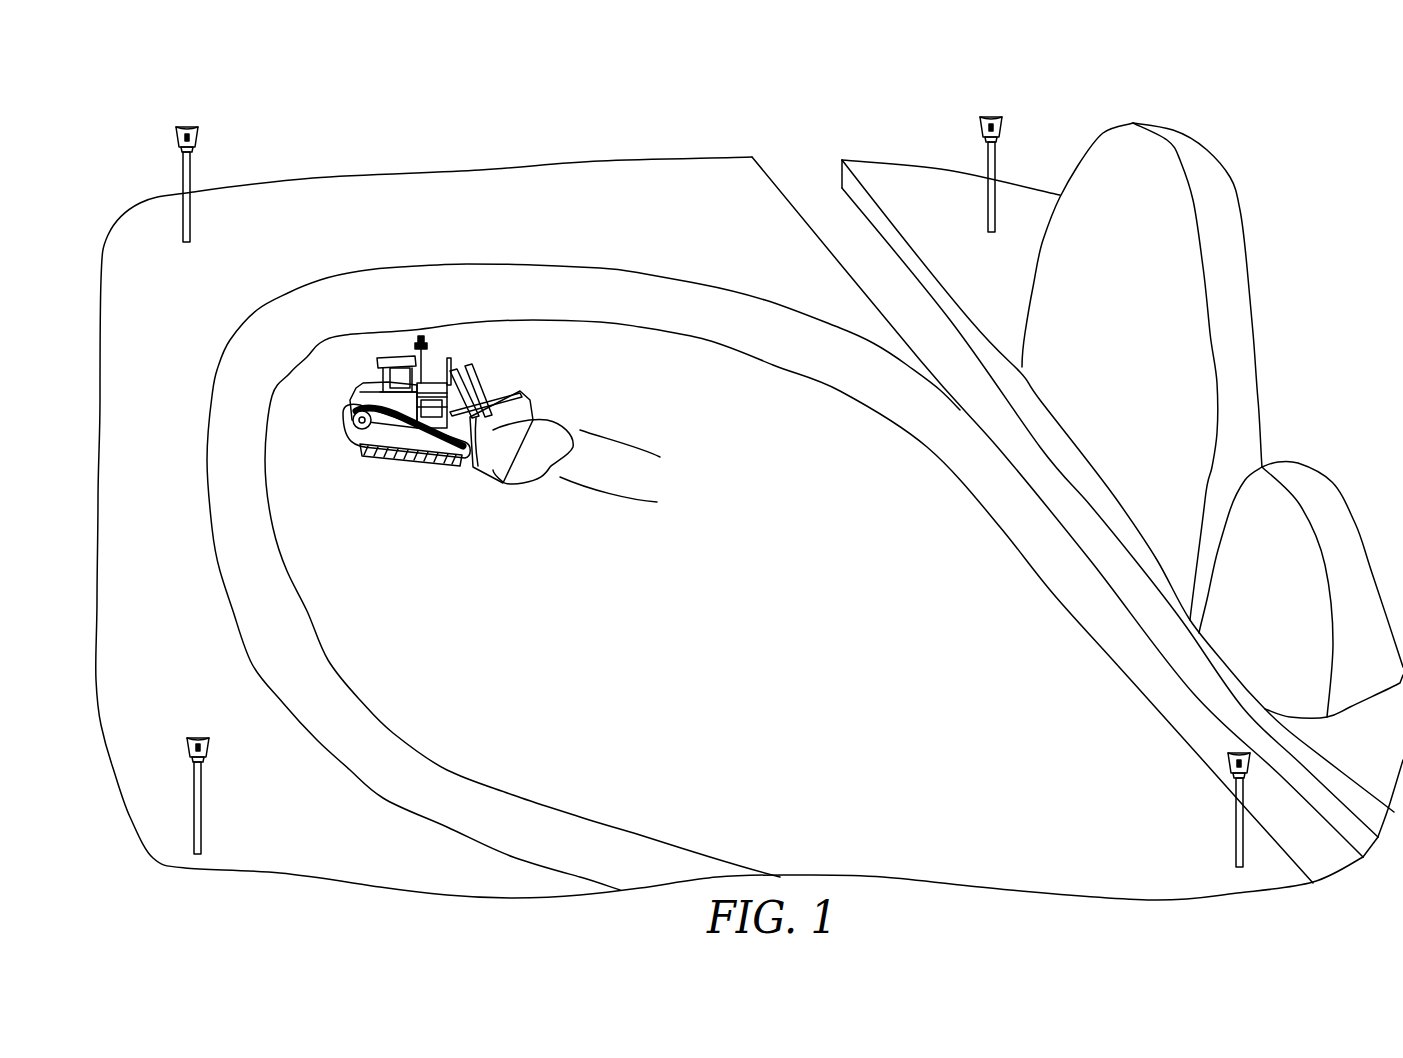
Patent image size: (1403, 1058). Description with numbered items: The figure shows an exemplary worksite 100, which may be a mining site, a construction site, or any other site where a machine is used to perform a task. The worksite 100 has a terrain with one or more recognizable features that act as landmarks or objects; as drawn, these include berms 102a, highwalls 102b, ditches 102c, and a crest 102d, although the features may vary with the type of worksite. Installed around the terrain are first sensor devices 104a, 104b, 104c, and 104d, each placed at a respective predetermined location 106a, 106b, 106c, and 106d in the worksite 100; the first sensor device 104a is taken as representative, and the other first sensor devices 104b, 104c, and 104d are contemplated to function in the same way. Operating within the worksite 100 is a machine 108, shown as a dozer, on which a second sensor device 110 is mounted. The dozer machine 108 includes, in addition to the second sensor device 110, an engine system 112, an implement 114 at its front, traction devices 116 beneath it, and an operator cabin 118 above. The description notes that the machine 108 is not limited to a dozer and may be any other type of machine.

The worksite 100 is at (1291, 120).
The berms 102a is at (417, 292).
The highwalls 102b is at (1145, 346).
The ditches 102c is at (823, 192).
The crest 102d is at (1272, 452).
The first sensor device 104a is at (198, 738).
The first sensor device 104b is at (190, 130).
The first sensor device 104c is at (990, 119).
The first sensor device 104d is at (1230, 753).
The predetermined location 106a is at (203, 805).
The predetermined location 106b is at (195, 178).
The predetermined location 106c is at (996, 167).
The predetermined location 106d is at (1236, 822).
The machine 108 is at (389, 365).
The second sensor device 110 is at (422, 345).
The engine system 112 is at (440, 355).
The implement 114 is at (512, 415).
The traction devices 116 is at (368, 453).
The operator cabin 118 is at (372, 380).